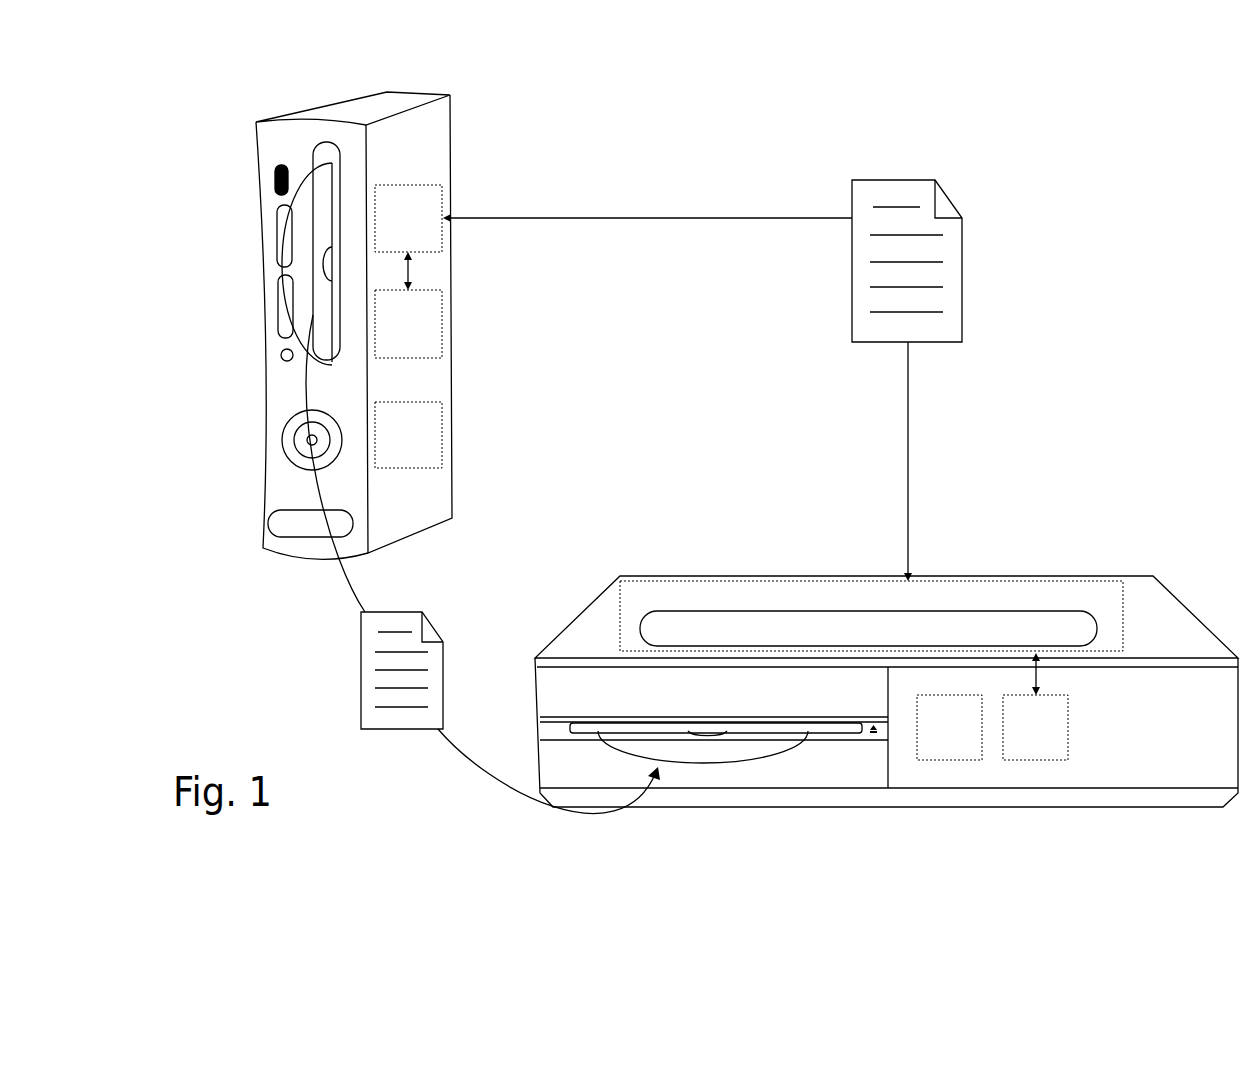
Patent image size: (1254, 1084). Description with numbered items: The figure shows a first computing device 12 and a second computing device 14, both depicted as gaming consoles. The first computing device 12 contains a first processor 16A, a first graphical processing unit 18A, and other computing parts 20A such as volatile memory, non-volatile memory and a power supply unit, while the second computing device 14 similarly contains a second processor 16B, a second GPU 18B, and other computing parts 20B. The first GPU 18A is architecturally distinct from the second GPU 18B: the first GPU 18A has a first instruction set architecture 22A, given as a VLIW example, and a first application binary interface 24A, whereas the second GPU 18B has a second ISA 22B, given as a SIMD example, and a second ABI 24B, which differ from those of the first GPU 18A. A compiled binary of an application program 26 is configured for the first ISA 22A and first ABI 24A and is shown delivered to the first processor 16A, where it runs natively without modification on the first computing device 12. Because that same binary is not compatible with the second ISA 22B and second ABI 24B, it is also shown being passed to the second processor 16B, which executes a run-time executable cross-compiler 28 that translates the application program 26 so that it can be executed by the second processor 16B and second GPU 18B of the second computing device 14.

The first computing device 12 is at (418, 93).
The second computing device 14 is at (1153, 577).
The first processor 16A is at (393, 240).
The first graphical processing unit 18A is at (393, 346).
The other computing parts 20A is at (393, 445).
The first instruction set architecture 22A is at (443, 323).
The first application binary interface 24A is at (607, 320).
The application program 26 is at (908, 180).
The second processor 16B is at (907, 606).
The second graphical processing unit 18B is at (1021, 738).
The other computing parts 20B is at (936, 738).
The second instruction set architecture 22B is at (1068, 738).
The second application binary interface 24B is at (1161, 755).
The run-time executable cross-compiler 28 is at (1060, 638).